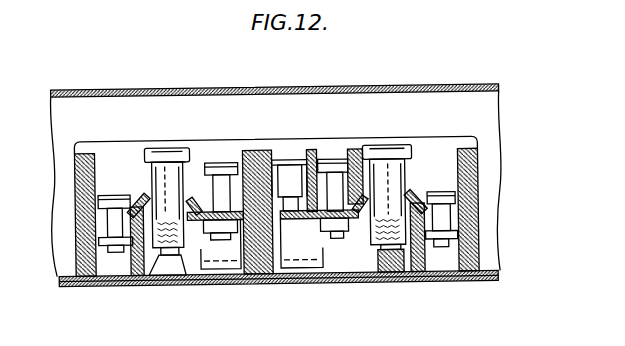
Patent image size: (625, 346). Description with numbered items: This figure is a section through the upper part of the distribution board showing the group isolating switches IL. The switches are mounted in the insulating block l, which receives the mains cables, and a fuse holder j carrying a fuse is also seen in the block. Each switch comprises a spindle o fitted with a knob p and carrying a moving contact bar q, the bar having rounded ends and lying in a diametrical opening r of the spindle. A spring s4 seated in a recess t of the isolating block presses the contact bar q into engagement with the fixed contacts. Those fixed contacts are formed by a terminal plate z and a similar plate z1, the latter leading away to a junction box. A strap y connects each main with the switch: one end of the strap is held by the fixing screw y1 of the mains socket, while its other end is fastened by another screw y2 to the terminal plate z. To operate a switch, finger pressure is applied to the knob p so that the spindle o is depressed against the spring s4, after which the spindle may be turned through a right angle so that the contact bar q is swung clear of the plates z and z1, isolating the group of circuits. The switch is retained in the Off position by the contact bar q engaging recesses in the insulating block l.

The knob p is at (150, 148).
The fuse holder j is at (157, 148).
The diametrical opening r is at (165, 213).
The terminal plate z is at (200, 194).
The fixing screw y1 is at (232, 169).
The group isolating switch IL is at (287, 182).
The screw y2 is at (342, 161).
The insulating block l is at (393, 182).
The spindle o is at (150, 174).
The plate z1 is at (76, 203).
The spring s4 is at (160, 253).
The recess t is at (153, 270).
The moving contact bar q is at (192, 277).
The strap y is at (205, 257).